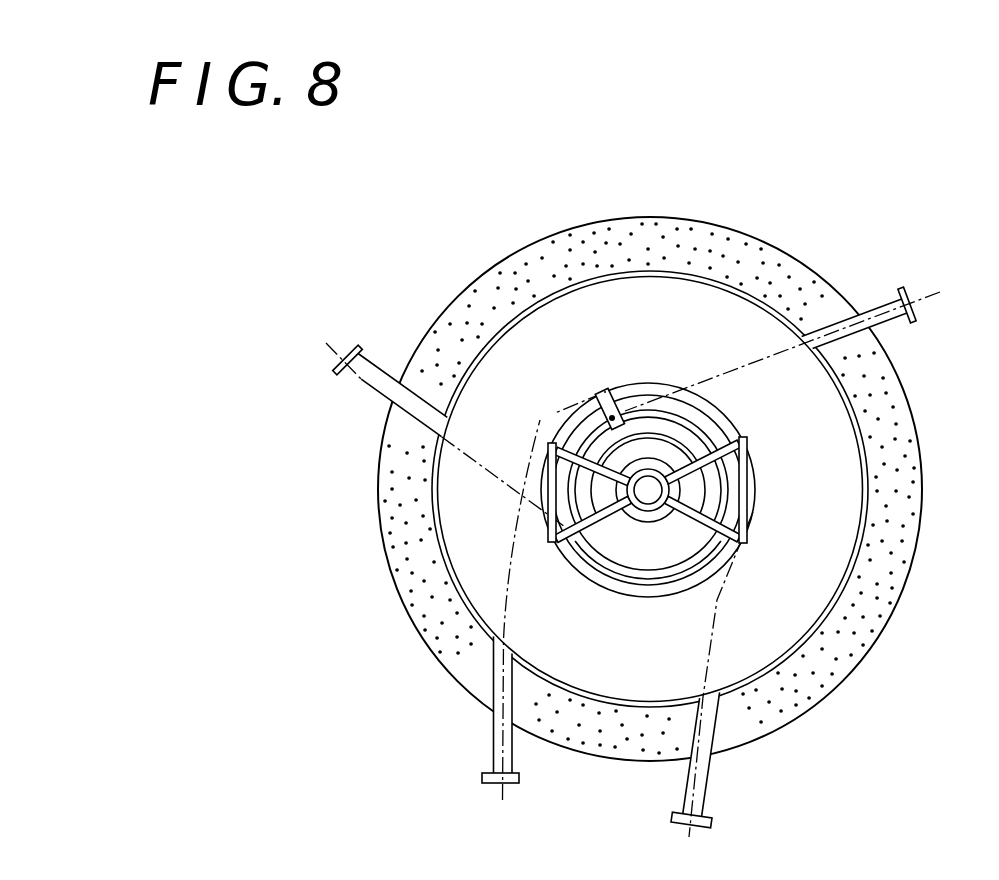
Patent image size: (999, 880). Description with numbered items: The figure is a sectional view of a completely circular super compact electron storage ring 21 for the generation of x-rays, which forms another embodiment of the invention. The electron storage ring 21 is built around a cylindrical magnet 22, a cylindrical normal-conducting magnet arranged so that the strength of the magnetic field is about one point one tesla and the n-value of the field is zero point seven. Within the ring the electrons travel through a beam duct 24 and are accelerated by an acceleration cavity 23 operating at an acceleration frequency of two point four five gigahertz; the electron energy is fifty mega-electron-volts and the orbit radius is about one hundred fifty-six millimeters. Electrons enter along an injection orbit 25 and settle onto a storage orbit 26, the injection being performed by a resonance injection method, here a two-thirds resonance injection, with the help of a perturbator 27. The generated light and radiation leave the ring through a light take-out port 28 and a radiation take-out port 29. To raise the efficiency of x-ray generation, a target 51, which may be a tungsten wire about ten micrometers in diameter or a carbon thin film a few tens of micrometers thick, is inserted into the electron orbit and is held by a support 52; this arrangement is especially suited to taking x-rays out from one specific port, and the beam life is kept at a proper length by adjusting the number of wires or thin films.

The completely circular super compact electron storage ring 21 is at (744, 167).
The cylindrical magnet 22 is at (762, 242).
The acceleration cavity 23 is at (741, 505).
The beam duct 24 is at (700, 585).
The injection orbit 25 is at (497, 702).
The storage orbit 26 is at (623, 570).
The perturbator 27 is at (540, 437).
The light take-out port 28 is at (363, 384).
The radiation take-out port 29 is at (898, 295).
The target 51 is at (616, 412).
The support 52 is at (605, 392).